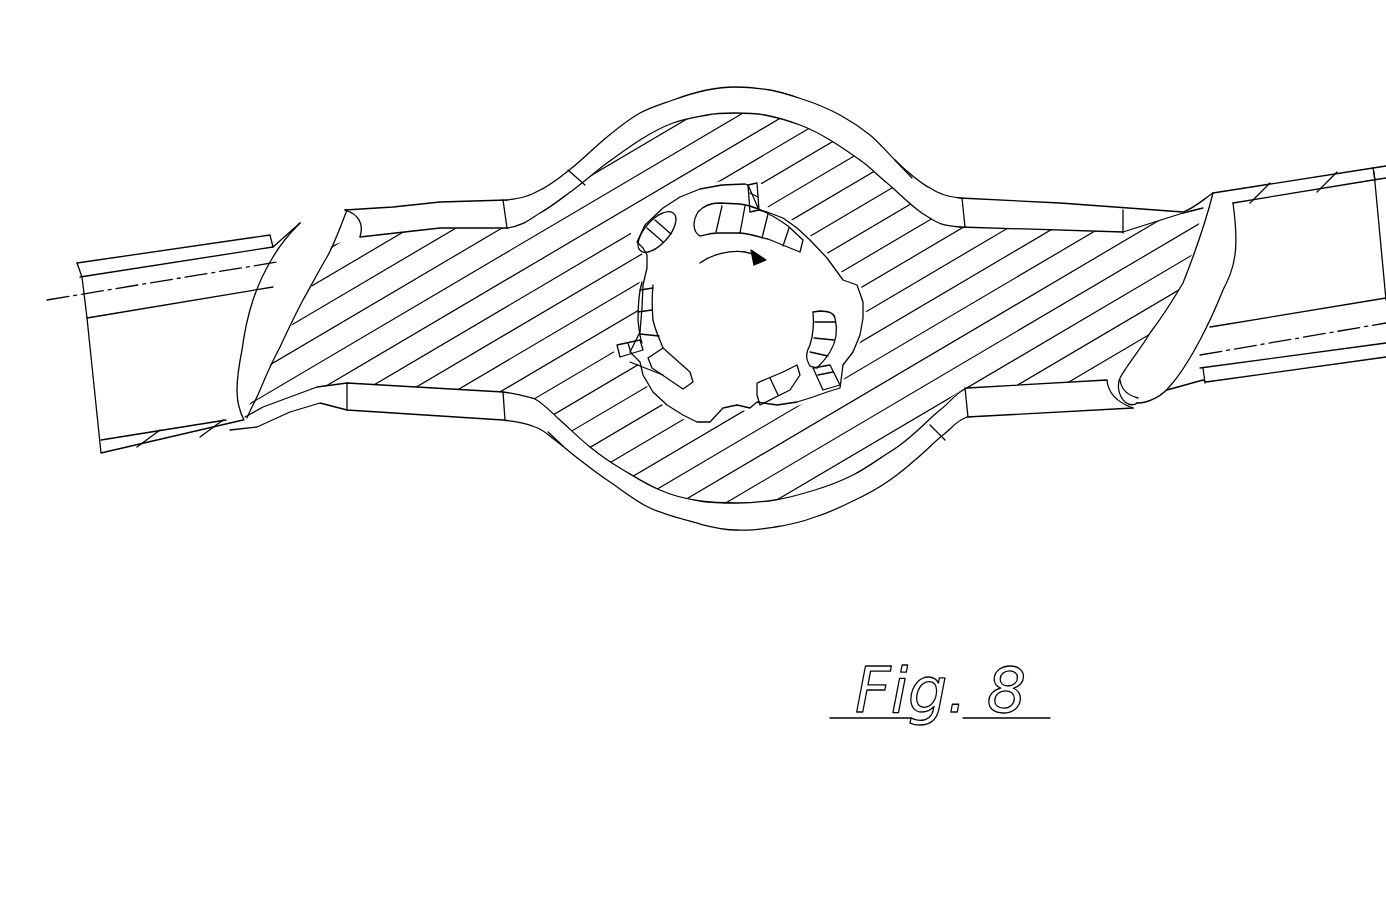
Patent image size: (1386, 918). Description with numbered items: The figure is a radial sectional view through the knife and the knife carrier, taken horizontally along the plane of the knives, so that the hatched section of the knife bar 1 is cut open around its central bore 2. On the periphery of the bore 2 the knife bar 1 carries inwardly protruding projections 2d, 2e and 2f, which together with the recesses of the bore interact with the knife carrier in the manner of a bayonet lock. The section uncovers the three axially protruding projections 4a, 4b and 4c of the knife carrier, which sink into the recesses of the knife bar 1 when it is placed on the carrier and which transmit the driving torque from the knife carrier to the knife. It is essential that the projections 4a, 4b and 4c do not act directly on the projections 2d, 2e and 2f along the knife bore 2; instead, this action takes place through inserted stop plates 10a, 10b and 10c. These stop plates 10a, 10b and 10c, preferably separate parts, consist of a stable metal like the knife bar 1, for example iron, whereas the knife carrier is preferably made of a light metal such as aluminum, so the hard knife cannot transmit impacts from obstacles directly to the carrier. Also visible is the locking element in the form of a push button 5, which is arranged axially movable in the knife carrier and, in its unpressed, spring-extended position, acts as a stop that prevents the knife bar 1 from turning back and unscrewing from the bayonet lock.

The knife bar 1 is at (456, 264).
The bore 2 is at (728, 348).
The projection 2d is at (630, 340).
The projection 2e is at (763, 203).
The projection 2f is at (797, 393).
The projection 4a is at (648, 362).
The projection 4b is at (722, 207).
The projection 4c is at (835, 352).
The push button 5 is at (653, 237).
The stop plate 10a is at (618, 352).
The stop plate 10b is at (757, 185).
The stop plate 10c is at (822, 387).